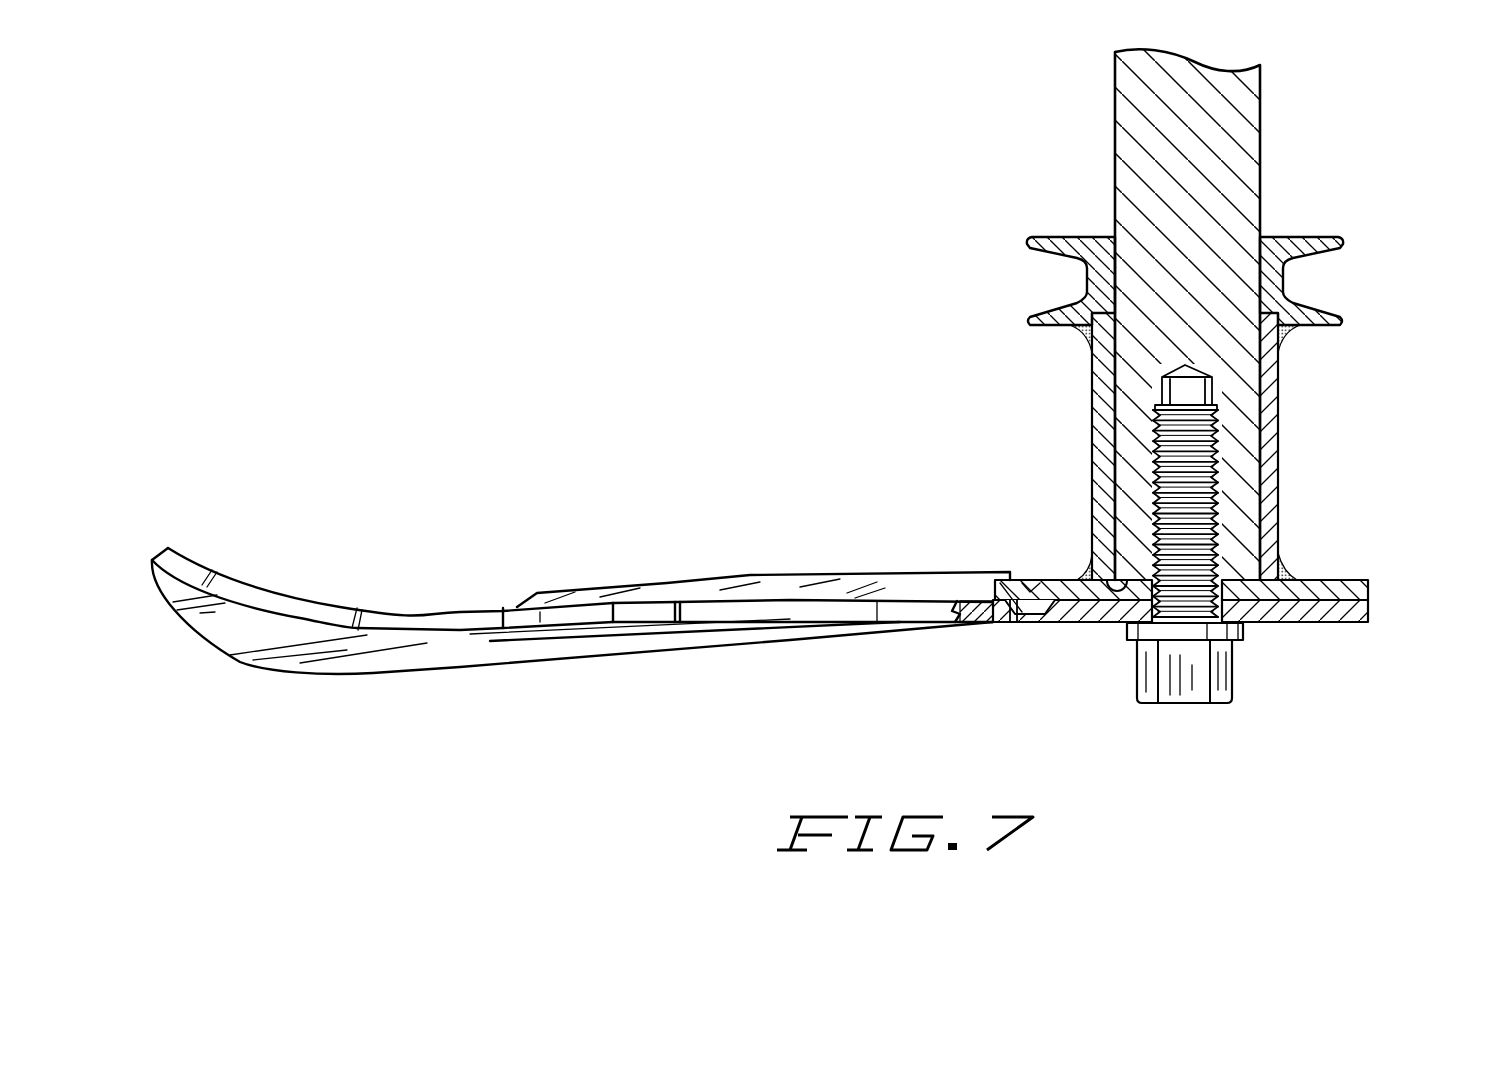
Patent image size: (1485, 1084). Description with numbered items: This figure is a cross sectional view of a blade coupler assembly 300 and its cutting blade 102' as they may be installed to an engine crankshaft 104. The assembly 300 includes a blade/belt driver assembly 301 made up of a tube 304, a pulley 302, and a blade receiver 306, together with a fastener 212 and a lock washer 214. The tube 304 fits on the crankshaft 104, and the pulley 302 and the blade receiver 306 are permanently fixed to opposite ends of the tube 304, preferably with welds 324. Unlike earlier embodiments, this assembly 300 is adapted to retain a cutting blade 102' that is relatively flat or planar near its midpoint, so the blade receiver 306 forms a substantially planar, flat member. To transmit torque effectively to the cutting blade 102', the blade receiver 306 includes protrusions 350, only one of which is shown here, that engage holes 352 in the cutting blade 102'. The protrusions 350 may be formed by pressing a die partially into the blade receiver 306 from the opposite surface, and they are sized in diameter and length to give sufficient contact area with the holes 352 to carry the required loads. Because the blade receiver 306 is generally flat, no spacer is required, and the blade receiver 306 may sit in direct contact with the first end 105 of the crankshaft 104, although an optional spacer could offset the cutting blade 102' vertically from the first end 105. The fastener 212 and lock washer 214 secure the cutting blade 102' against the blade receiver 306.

The cutting blade 102' is at (581, 587).
The blade coupler assembly 300 is at (845, 243).
The crankshaft 104 is at (1115, 103).
The pulley 302 is at (1053, 235).
The tube 304 is at (1090, 415).
The blade/belt driver assembly 301 is at (1283, 455).
The welds 324 is at (1077, 338).
The first end of the crankshaft 105 is at (1093, 578).
The blade receiver 306 is at (1347, 580).
The protrusions 350 is at (1027, 583).
The holes 352 is at (1023, 623).
The lock washer 214 is at (1245, 632).
The fastener 212 is at (1197, 703).